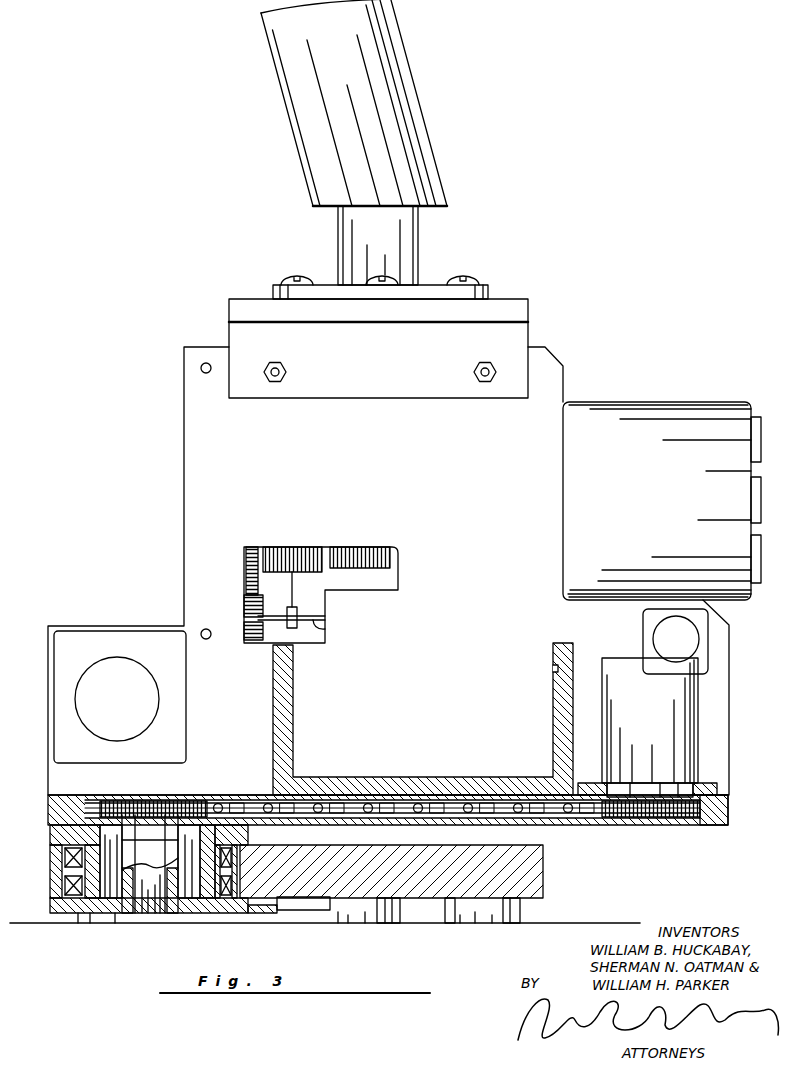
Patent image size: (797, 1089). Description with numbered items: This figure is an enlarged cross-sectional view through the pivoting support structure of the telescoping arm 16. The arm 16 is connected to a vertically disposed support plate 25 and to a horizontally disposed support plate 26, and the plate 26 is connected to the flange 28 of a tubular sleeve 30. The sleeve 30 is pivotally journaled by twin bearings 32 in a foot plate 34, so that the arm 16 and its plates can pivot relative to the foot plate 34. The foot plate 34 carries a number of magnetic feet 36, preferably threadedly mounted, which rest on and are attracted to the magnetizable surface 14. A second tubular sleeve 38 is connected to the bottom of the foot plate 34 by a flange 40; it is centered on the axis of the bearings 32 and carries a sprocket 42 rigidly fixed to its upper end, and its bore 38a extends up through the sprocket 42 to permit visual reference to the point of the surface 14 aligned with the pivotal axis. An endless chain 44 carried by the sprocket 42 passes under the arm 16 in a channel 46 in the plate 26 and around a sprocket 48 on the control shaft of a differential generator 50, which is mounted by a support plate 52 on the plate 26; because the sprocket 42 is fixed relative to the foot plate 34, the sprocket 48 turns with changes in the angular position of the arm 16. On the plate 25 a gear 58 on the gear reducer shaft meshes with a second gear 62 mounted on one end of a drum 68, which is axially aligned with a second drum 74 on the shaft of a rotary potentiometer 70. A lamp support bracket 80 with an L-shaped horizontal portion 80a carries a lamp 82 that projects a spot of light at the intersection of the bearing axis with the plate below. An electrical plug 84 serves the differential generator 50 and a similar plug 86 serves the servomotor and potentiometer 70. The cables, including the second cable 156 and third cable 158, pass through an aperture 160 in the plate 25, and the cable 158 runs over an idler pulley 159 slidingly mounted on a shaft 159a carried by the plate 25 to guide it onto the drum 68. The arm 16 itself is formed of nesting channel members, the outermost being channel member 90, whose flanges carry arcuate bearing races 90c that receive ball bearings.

The lamp 82 is at (405, 143).
The L-shaped horizontally disposed portion 80a is at (518, 307).
The lamp support bracket 80 is at (518, 335).
The vertically disposed support plate 25 is at (552, 370).
The rotary potentiometer 70 is at (632, 412).
The second cable 156 is at (386, 568).
The aperture 160 is at (244, 557).
The drum 68 is at (302, 546).
The second drum 74 is at (352, 546).
The third cable 158 is at (290, 578).
The second gear 62 is at (252, 592).
The gear 58 is at (252, 645).
The idler pulley 159 is at (300, 612).
The shaft 159a is at (322, 627).
The electrical plug 86 is at (94, 683).
The arm 16 is at (413, 709).
The channel member 90 is at (273, 720).
The bearing race 90c is at (556, 668).
The electrical plug 84 is at (690, 645).
The differential generator 50 is at (685, 733).
The support plate 52 is at (705, 790).
The sprocket 42 is at (50, 802).
The channel 46 is at (445, 813).
The endless chain 44 is at (588, 810).
The flange 28 is at (243, 842).
The sprocket 48 is at (660, 797).
The horizontally disposed support plate 26 is at (722, 812).
The tubular sleeve 30 is at (95, 841).
The twin bearings 32 is at (68, 879).
The tubular sleeve 38 is at (130, 905).
The bore 38a is at (160, 905).
The foot plate 34 is at (535, 865).
The flange 40 is at (275, 908).
The magnetic feet 36 is at (70, 916).
The magnetizable surface 14 is at (583, 919).